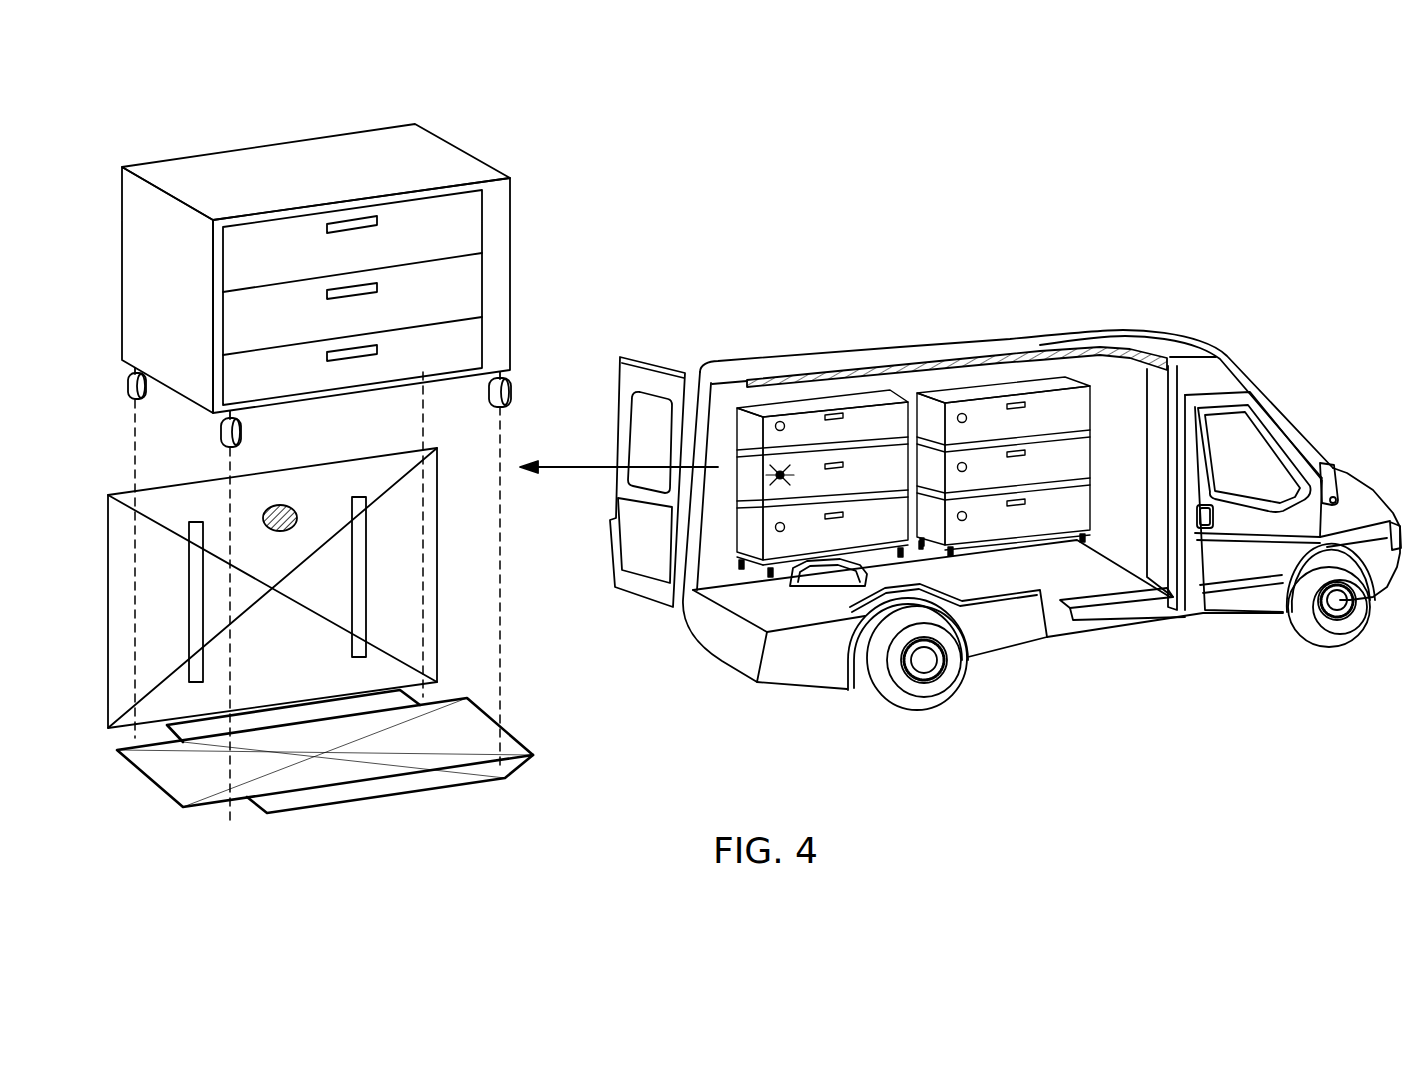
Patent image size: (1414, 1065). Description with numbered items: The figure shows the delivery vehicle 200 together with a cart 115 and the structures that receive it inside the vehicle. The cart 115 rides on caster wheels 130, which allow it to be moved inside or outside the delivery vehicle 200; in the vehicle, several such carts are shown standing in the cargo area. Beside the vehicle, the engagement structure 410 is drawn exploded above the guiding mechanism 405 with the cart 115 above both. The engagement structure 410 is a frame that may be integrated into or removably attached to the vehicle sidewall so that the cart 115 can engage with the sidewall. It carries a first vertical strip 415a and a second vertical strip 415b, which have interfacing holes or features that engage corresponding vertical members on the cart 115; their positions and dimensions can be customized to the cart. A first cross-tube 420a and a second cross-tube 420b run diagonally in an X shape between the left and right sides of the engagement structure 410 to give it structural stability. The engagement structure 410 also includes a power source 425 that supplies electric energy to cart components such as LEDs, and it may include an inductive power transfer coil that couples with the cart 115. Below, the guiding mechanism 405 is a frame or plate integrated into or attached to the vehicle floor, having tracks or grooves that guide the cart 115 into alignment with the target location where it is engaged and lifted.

The cart 115 is at (466, 149).
The caster wheels 130 is at (126, 385).
The delivery vehicle 200 is at (1233, 364).
The guiding mechanism 405 is at (160, 792).
The engagement structure 410 is at (108, 590).
The first vertical strip 415a is at (196, 521).
The second vertical strip 415b is at (357, 497).
The first cross-tube 420a is at (383, 496).
The second cross-tube 420b is at (385, 653).
The power source 425 is at (280, 532).